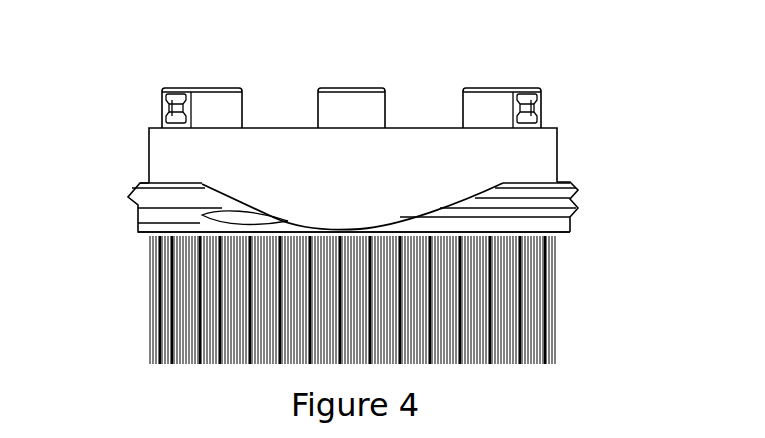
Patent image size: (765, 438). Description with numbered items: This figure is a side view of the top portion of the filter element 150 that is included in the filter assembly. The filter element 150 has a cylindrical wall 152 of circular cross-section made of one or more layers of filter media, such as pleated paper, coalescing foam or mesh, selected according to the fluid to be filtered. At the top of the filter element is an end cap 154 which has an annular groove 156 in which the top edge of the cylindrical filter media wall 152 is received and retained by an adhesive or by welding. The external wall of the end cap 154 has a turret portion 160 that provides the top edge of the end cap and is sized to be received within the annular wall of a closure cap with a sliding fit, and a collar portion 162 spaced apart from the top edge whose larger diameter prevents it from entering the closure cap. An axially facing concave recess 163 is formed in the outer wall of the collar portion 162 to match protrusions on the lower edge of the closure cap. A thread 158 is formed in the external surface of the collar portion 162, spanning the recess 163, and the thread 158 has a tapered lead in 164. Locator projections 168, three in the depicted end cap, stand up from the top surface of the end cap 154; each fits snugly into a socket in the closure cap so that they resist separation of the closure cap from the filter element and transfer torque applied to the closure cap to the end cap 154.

The filter element 150 is at (643, 220).
The cylindrical wall 152 is at (555, 333).
The end cap 154 is at (149, 165).
The annular groove 156 is at (142, 238).
The thread 158 is at (577, 207).
The turret portion 160 is at (430, 140).
The collar portion 162 is at (137, 213).
The axially facing concave recess 163 is at (288, 222).
The tapered lead in 164 is at (202, 222).
The locator projections 168 is at (196, 87).